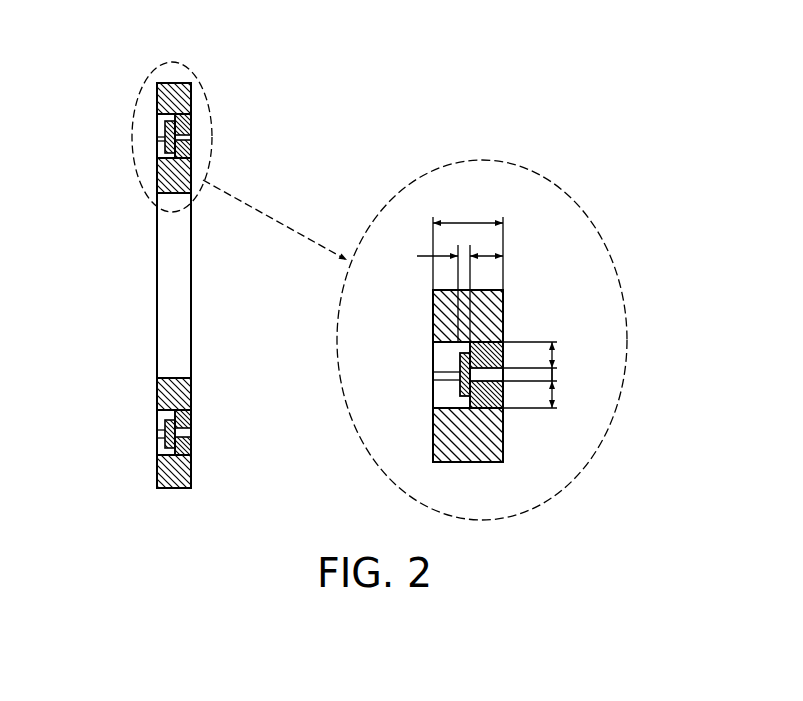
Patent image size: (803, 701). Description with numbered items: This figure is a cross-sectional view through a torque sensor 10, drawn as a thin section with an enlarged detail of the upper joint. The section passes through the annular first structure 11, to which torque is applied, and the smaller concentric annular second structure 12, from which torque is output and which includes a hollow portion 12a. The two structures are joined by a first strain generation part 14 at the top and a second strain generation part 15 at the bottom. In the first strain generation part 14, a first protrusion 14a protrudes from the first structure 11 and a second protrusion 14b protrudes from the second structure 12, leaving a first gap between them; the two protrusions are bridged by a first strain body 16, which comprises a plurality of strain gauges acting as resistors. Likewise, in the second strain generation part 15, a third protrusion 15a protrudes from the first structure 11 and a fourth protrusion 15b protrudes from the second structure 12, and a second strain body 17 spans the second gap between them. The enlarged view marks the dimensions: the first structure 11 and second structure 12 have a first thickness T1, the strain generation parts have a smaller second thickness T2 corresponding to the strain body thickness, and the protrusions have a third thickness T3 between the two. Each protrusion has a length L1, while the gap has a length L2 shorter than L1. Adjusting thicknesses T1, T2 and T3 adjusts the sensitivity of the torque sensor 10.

The torque sensor 10 is at (146, 75).
The first structure 11 is at (188, 90).
The second structure 12 is at (187, 190).
The hollow portion 12a is at (183, 284).
The first strain generation part 14 is at (128, 117).
The first protrusion 14a is at (188, 128).
The second protrusion 14b is at (188, 153).
The second strain generation part 15 is at (146, 414).
The third protrusion 15a is at (188, 447).
The fourth protrusion 15b is at (188, 420).
The first strain body 16 is at (165, 145).
The second strain body 17 is at (160, 443).
The first thickness T1 is at (470, 222).
The second thickness T2 is at (458, 263).
The third thickness T3 is at (490, 251).
The length of protrusion L1 is at (553, 355).
The length of gap L2 is at (553, 378).